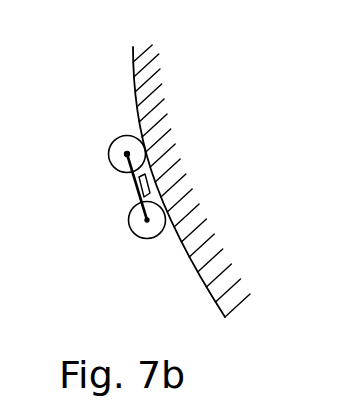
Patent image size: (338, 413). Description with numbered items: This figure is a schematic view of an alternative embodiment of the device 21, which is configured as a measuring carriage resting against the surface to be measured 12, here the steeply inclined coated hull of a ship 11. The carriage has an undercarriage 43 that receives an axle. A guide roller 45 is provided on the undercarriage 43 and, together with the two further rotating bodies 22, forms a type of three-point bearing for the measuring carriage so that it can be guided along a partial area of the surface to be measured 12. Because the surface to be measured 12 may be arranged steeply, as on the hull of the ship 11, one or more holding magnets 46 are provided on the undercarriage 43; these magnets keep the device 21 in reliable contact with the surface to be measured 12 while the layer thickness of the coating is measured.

The ship 11 is at (190, 105).
The surface to be measured 12 is at (137, 80).
The device 21 is at (105, 160).
The rotating bodies 22 is at (147, 233).
The undercarriage 43 is at (136, 181).
The guide roller 45 is at (127, 144).
The holding magnets 46 is at (136, 187).